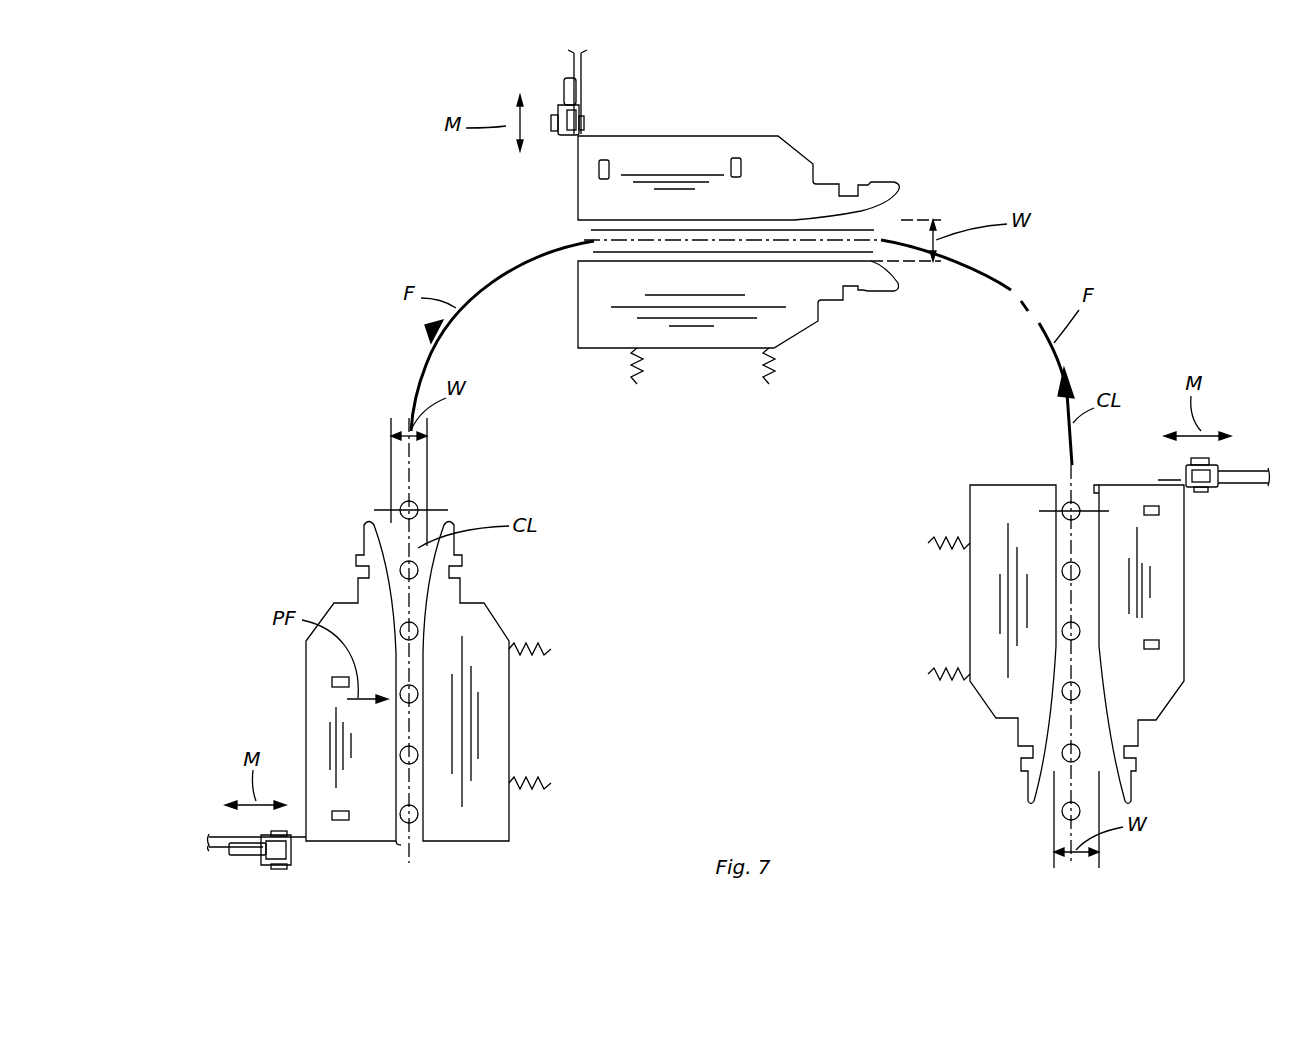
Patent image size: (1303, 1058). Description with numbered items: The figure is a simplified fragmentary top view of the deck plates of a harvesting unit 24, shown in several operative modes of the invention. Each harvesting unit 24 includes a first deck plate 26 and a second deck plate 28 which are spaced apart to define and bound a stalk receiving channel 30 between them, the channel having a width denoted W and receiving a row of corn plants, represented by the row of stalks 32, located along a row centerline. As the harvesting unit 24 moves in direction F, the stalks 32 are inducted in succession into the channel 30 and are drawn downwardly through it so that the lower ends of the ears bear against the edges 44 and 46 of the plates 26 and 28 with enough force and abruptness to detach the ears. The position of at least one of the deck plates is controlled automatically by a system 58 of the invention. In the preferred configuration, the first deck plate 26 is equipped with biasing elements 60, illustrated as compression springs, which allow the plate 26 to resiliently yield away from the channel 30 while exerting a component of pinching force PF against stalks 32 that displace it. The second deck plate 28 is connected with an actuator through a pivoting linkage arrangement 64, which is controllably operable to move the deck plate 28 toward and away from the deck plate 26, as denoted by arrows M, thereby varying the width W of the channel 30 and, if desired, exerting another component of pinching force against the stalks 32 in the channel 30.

The harvesting unit 24 is at (636, 137).
The first deck plate 26 is at (700, 352).
The second deck plate 28 is at (712, 138).
The stalk receiving channel 30 is at (808, 224).
The stalks 32 is at (417, 510).
The edge of first deck plate 44 is at (577, 262).
The edge of second deck plate 46 is at (577, 224).
The system for automatically controlling deck plate position 58 is at (562, 82).
The biasing elements 60 is at (636, 386).
The pivoting linkage arrangement 64 is at (563, 92).